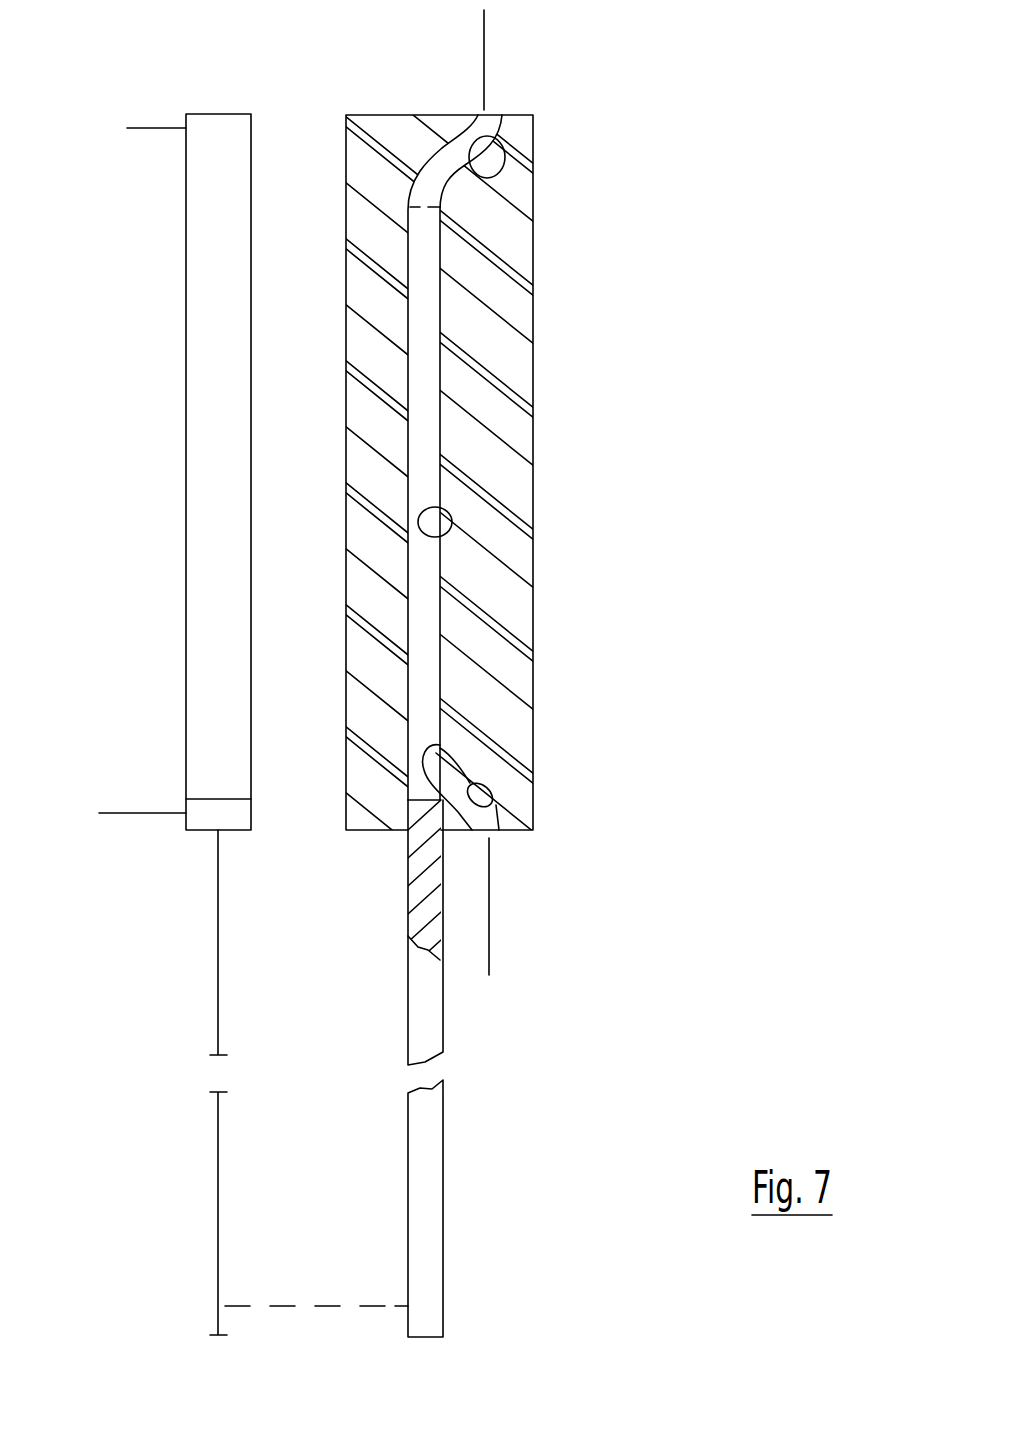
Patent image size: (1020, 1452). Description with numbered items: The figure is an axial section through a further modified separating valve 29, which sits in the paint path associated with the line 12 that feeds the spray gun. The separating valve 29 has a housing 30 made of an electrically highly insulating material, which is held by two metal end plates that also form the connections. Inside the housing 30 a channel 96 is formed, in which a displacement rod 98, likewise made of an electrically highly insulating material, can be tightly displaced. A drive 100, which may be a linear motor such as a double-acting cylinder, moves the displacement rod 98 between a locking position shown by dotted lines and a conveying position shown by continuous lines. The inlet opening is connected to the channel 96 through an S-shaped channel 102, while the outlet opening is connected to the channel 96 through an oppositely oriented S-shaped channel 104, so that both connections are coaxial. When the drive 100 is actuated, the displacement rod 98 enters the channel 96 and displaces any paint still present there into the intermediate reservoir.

The line 12 is at (490, 938).
The separating valve 29 is at (663, 392).
The housing 30 is at (510, 612).
The channel 96 is at (453, 523).
The displacement rod 98 is at (441, 880).
The drive 100 is at (213, 542).
The S-shaped channel 102 is at (496, 800).
The S-shaped channel 104 is at (470, 168).